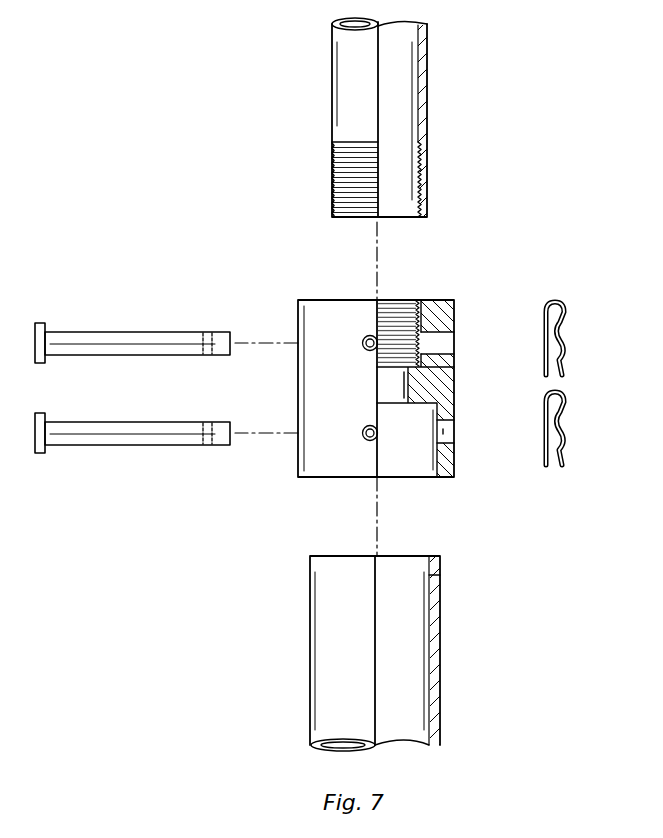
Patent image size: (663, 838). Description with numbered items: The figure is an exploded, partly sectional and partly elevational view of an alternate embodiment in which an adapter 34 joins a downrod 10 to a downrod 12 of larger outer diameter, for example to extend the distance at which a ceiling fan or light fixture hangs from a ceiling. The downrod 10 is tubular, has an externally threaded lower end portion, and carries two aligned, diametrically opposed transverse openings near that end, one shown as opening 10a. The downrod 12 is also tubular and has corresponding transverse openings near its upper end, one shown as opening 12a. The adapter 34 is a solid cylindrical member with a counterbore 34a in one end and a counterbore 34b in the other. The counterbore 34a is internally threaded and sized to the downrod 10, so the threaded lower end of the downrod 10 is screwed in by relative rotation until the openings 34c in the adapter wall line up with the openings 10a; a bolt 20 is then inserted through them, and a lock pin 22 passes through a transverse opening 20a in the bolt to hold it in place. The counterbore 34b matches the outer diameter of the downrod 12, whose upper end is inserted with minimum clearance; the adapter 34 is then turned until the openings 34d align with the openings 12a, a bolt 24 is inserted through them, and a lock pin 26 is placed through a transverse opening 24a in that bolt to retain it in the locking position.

The downrod 10 is at (331, 82).
The transverse opening 10a is at (425, 188).
The downrod 12 is at (310, 666).
The transverse opening 12a is at (434, 586).
The bolt 20 is at (118, 332).
The transverse opening 20a is at (204, 340).
The lock pin 22 is at (568, 310).
The bolt 24 is at (118, 446).
The transverse opening 24a is at (204, 446).
The lock pin 26 is at (568, 398).
The adapter 34 is at (325, 296).
The counterbore 34a is at (400, 315).
The counterbore 34b is at (437, 462).
The opening 34c is at (448, 345).
The opening 34d is at (448, 432).